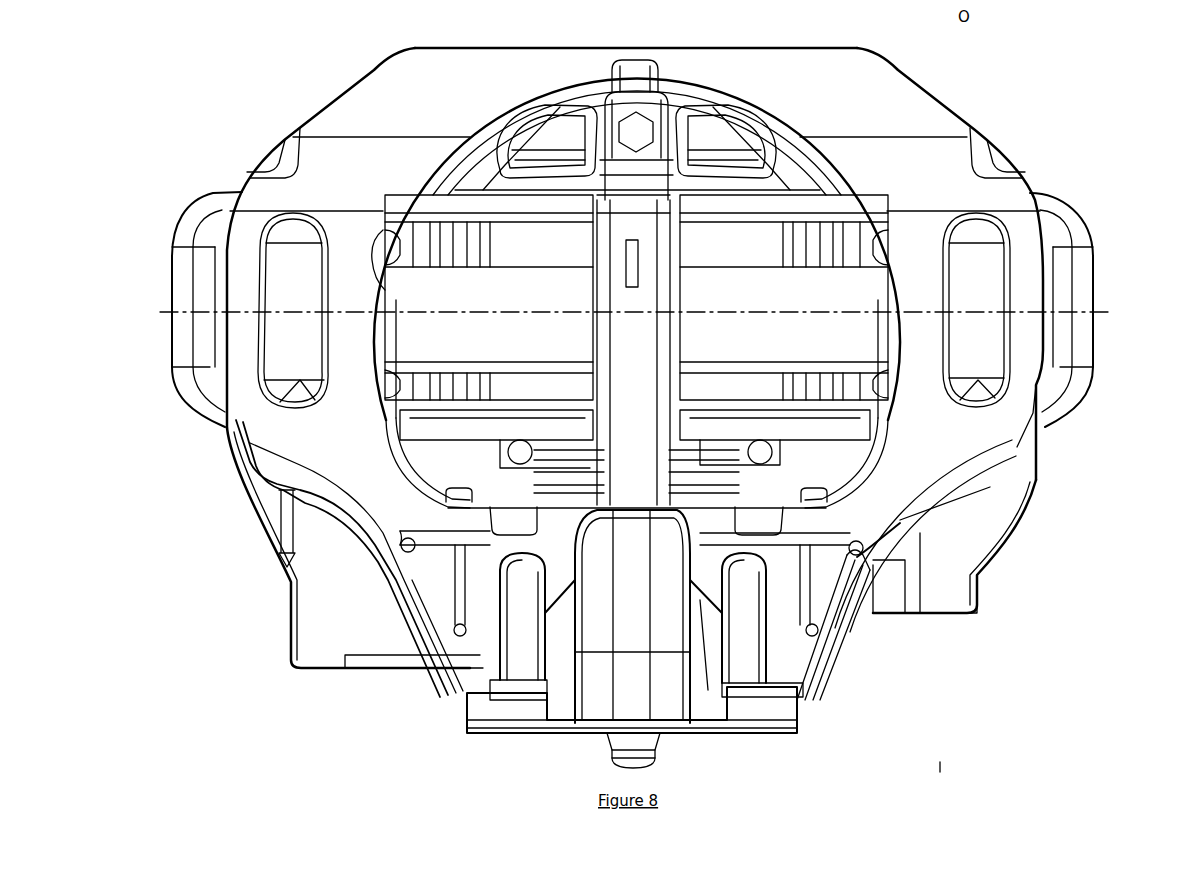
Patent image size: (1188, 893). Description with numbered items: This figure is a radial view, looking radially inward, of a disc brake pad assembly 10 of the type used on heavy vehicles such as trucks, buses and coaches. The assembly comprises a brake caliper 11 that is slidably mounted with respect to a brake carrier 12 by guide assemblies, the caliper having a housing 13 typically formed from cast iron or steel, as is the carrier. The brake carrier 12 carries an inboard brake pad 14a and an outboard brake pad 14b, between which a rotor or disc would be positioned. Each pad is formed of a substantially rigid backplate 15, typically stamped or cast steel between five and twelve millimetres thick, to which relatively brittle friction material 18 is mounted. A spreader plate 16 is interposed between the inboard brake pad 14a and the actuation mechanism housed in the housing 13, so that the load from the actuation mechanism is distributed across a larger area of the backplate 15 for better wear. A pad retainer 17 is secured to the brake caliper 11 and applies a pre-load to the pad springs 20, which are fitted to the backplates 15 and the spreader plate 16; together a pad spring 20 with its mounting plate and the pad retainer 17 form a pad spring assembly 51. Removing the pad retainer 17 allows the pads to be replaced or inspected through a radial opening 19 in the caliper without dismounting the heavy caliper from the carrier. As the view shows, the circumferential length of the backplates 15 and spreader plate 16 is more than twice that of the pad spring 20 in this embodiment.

The disc brake pad assembly 10 is at (246, 150).
The brake caliper 11 is at (848, 120).
The brake carrier 12 is at (1077, 290).
The housing 13 is at (604, 680).
The inboard brake pad 14a is at (880, 432).
The outboard brake pad 14b is at (780, 233).
The backplate 15 is at (770, 170).
The spreader plate 16 is at (795, 485).
The pad retainer 17 is at (607, 127).
The friction material 18 is at (722, 237).
The radial opening 19 is at (865, 292).
The pad spring 20 is at (427, 167).
The pad spring assembly 51 is at (640, 67).